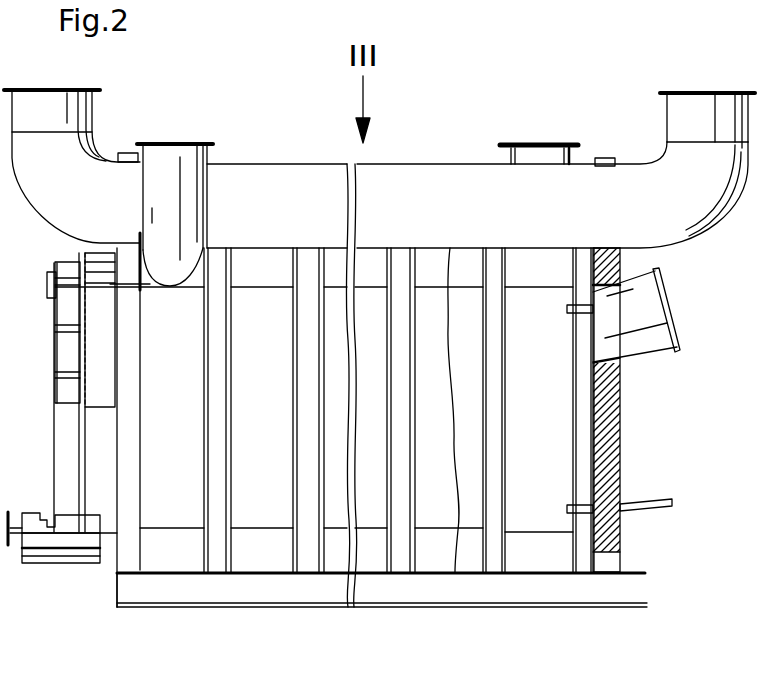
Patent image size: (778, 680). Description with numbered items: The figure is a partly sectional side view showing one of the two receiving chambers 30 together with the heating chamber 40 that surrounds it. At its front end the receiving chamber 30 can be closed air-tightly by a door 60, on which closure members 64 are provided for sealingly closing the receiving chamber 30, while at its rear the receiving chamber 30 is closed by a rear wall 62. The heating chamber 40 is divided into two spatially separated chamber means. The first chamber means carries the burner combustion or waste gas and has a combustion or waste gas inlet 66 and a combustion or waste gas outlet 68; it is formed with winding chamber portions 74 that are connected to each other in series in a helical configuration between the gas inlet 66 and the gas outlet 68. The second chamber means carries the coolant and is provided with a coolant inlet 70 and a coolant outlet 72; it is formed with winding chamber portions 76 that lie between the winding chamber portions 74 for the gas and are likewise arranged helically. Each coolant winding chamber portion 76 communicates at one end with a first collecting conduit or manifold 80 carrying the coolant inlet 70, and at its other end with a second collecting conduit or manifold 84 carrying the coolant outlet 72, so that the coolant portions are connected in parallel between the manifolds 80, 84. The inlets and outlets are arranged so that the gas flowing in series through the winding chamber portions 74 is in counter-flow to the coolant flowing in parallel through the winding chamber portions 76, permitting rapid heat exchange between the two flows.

The receiving chamber 30 is at (153, 373).
The heating chamber 40 is at (274, 258).
The door 60 is at (65, 452).
The rear wall 62 is at (610, 438).
The closure members 64 is at (47, 280).
The combustion or waste gas inlet 66 is at (193, 189).
The combustion or waste gas outlet 68 is at (540, 157).
The coolant inlet 70 is at (673, 153).
The coolant outlet 72 is at (58, 201).
The winding chamber portions 74 is at (171, 555).
The winding chamber portions 76 is at (218, 254).
The first collecting conduit or manifold 80 is at (477, 182).
The second collecting conduit or manifold 84 is at (397, 190).